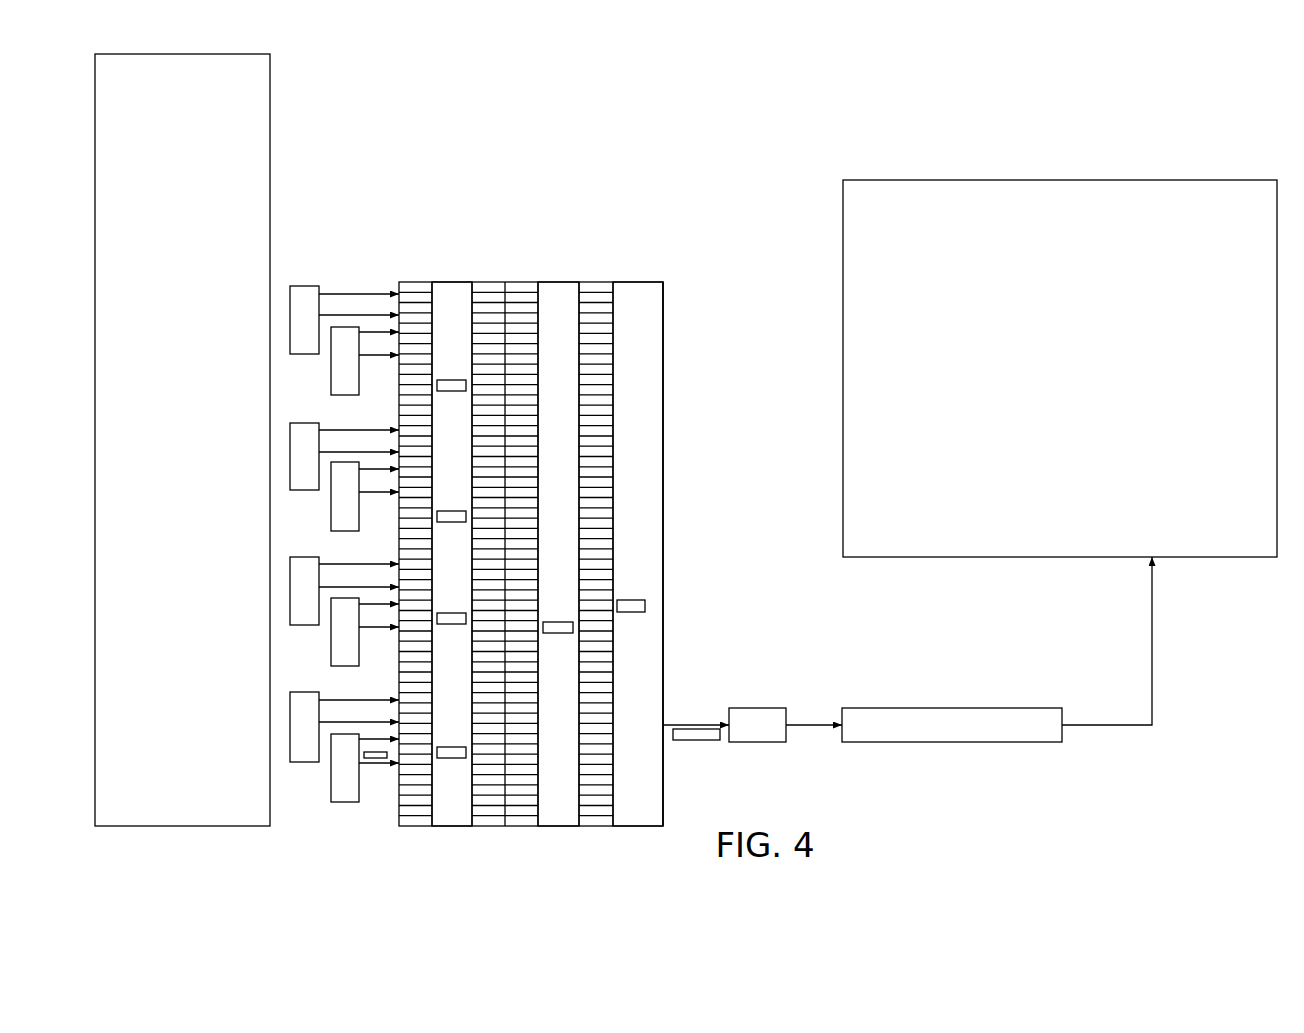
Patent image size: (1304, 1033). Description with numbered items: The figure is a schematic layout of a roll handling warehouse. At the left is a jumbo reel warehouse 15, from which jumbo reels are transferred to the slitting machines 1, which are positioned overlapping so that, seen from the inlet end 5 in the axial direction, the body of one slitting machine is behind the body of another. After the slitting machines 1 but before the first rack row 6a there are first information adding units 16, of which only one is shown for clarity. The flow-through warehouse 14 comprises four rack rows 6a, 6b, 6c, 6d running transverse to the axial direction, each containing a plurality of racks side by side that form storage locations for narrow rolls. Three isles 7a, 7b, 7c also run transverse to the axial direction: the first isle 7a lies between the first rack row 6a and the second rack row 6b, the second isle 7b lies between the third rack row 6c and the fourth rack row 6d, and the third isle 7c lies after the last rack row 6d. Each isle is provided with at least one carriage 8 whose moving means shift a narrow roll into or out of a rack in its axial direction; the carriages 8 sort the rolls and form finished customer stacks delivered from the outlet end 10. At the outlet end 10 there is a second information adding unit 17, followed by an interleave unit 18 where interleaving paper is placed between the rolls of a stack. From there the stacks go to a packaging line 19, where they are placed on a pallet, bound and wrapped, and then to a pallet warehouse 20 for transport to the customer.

The slitting machine 1 is at (297, 286).
The inlet end 5 is at (365, 290).
The first rack row 6a is at (413, 270).
The second rack row 6b is at (496, 273).
The third rack row 6c is at (522, 272).
The fourth rack row 6d is at (593, 268).
The first isle 7a is at (455, 272).
The second isle 7b is at (563, 272).
The third isle 7c is at (652, 418).
The carriage 8 is at (450, 385).
The outlet end 10 is at (673, 565).
The flow-through warehouse 14 is at (585, 207).
The jumbo reel warehouse 15 is at (247, 112).
The first information adding unit 16 is at (375, 759).
The second information adding unit 17 is at (690, 735).
The interleave unit 18 is at (752, 720).
The packaging line 19 is at (967, 725).
The pallet warehouse 20 is at (938, 225).